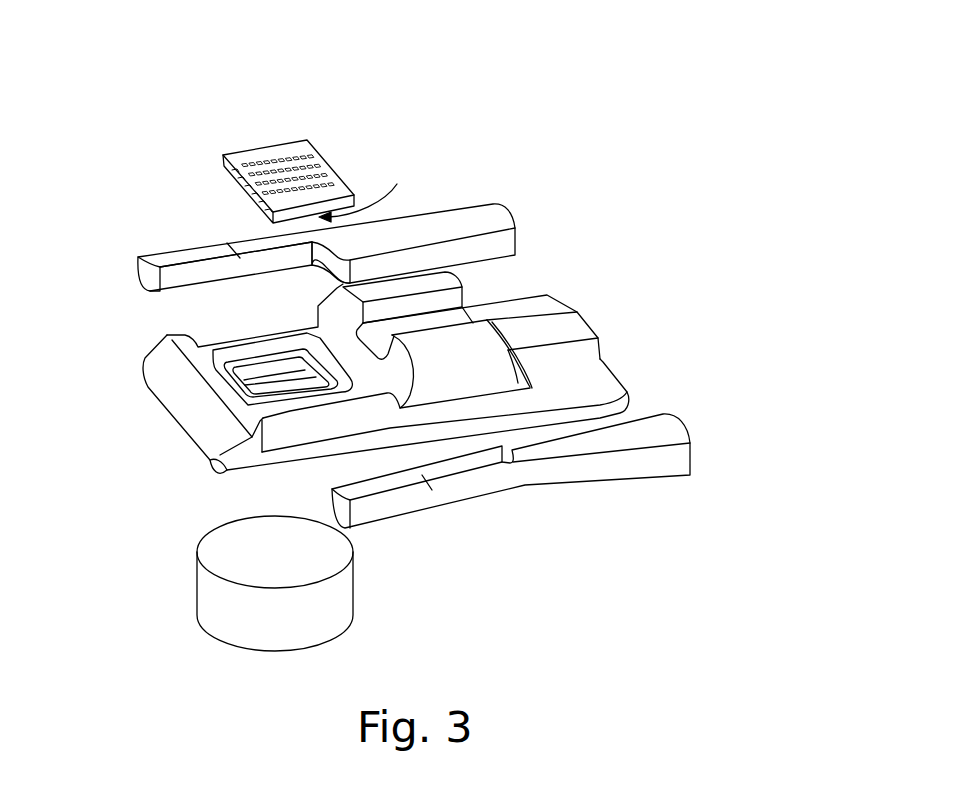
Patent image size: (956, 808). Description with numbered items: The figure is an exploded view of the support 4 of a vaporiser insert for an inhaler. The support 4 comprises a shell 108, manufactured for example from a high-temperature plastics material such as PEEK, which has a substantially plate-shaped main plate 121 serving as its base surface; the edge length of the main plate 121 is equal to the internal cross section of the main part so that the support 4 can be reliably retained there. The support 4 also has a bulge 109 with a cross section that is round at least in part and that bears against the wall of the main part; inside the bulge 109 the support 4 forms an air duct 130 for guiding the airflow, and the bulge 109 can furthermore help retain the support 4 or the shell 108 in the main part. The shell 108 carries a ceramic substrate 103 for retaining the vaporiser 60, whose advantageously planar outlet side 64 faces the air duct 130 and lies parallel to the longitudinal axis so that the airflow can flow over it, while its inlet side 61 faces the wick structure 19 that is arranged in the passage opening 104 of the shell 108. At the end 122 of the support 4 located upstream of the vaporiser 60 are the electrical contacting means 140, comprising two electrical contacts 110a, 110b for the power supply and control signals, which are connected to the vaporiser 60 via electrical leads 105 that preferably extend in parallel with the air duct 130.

The vaporiser 60 is at (254, 153).
The outlet side 64 is at (323, 162).
The inlet side 61 is at (376, 196).
The electrical leads 105 is at (247, 247).
The electrical contacting means 140 is at (481, 360).
The electrical contact 110a is at (490, 210).
The electrical contact 110b is at (673, 438).
The end of the support 122 is at (362, 380).
The air duct 130 is at (383, 325).
The shell 108 is at (604, 377).
The ceramic substrate 103 is at (203, 378).
The support 4 is at (197, 418).
The passage opening 104 is at (247, 458).
The main plate 121 is at (213, 462).
The bulge 109 is at (453, 377).
The wick structure 19 is at (337, 603).